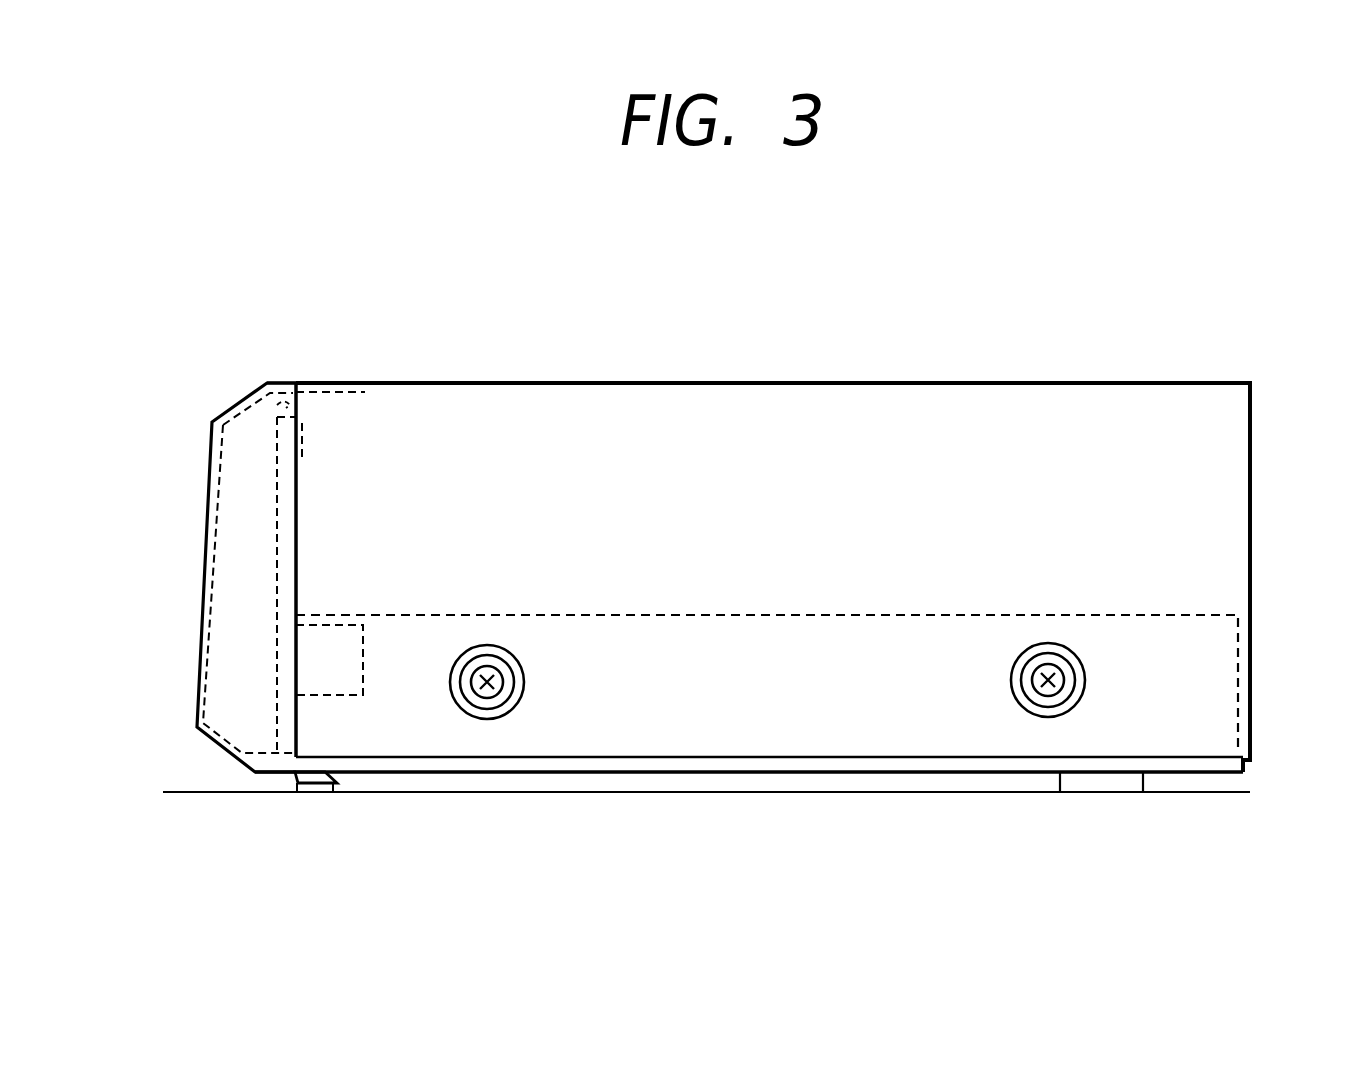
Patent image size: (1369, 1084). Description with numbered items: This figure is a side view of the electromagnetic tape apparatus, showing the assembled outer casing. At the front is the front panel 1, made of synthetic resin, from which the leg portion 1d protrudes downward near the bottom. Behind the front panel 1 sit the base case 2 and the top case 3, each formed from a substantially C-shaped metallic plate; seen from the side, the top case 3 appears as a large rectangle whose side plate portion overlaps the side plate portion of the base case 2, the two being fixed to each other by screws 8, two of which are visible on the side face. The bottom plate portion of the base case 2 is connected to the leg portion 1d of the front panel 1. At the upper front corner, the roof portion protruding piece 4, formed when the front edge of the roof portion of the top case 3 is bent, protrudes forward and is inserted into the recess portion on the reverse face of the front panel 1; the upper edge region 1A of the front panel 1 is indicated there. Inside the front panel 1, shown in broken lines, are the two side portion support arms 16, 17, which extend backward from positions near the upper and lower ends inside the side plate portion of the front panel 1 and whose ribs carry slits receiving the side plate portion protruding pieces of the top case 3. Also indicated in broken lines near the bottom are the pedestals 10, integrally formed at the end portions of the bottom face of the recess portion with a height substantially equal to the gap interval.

The front panel 1 is at (195, 512).
The upper edge of panel 1A is at (281, 383).
The leg portion 1d is at (313, 795).
The base case 2 is at (780, 600).
The top case 3 is at (724, 372).
The roof portion protruding piece 4 is at (247, 403).
The screws 8 is at (498, 682).
The pedestals 10 is at (253, 746).
The side portion support arm 16 is at (302, 443).
The side portion support arm 17 is at (340, 670).